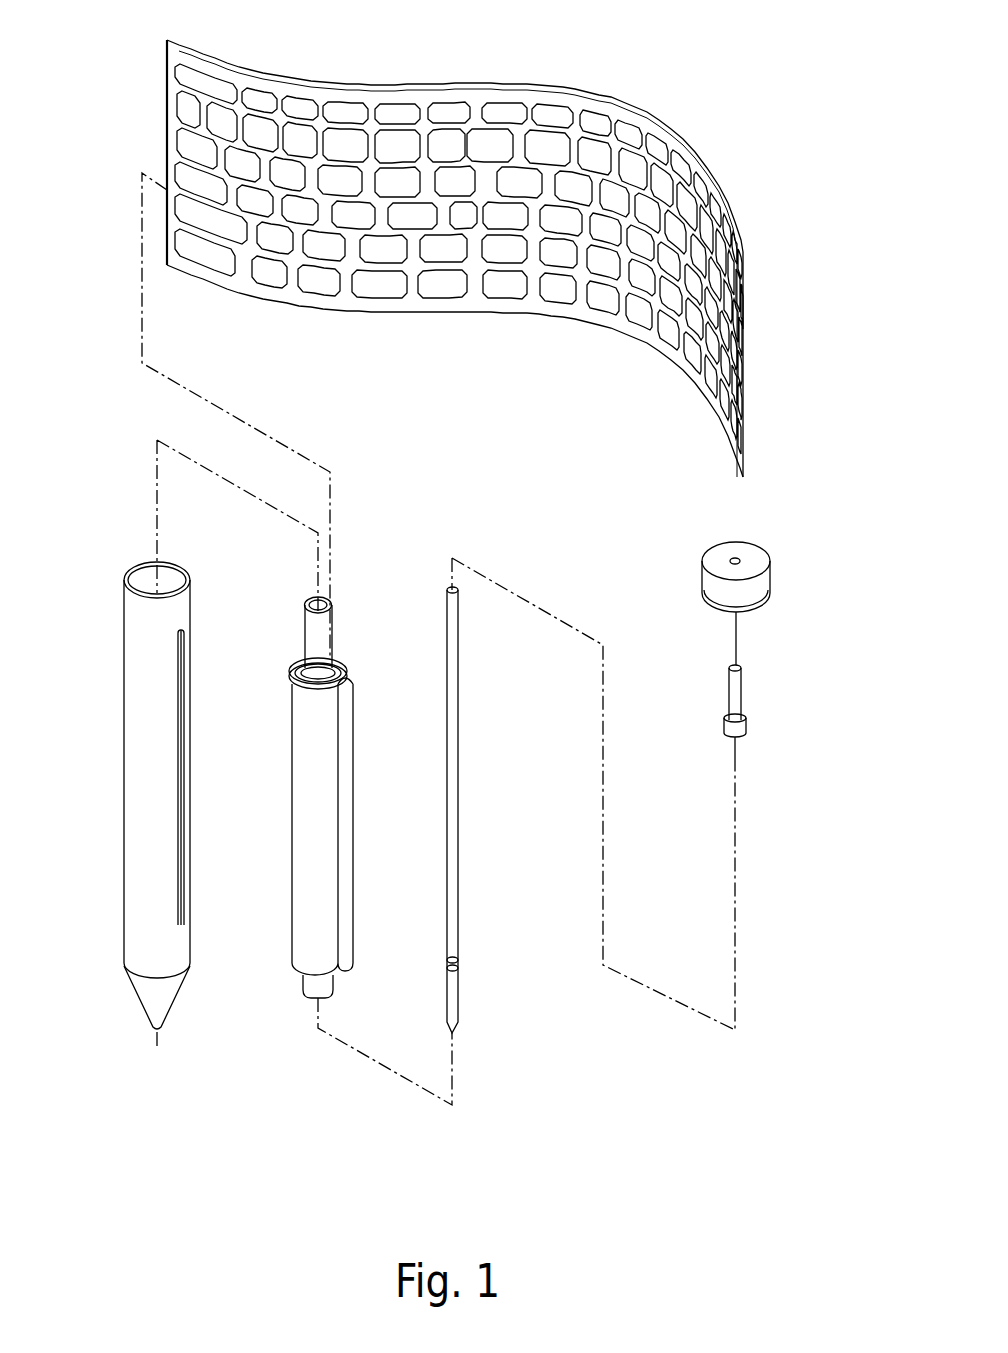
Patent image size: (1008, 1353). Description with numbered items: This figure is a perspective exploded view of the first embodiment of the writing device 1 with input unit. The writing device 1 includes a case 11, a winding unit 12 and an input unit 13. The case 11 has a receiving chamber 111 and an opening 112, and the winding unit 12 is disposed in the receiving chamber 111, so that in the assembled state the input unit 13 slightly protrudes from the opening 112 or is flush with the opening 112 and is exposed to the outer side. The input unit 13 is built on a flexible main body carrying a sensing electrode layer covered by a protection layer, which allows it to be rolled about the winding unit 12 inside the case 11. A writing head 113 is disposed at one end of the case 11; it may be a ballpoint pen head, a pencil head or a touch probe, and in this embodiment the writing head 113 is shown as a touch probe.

The writing device 1 is at (447, 552).
The case 11 is at (164, 765).
The receiving chamber 111 is at (148, 578).
The opening 112 is at (183, 635).
The writing head 113 is at (158, 1010).
The winding unit 12 is at (315, 697).
The input unit 13 is at (683, 218).